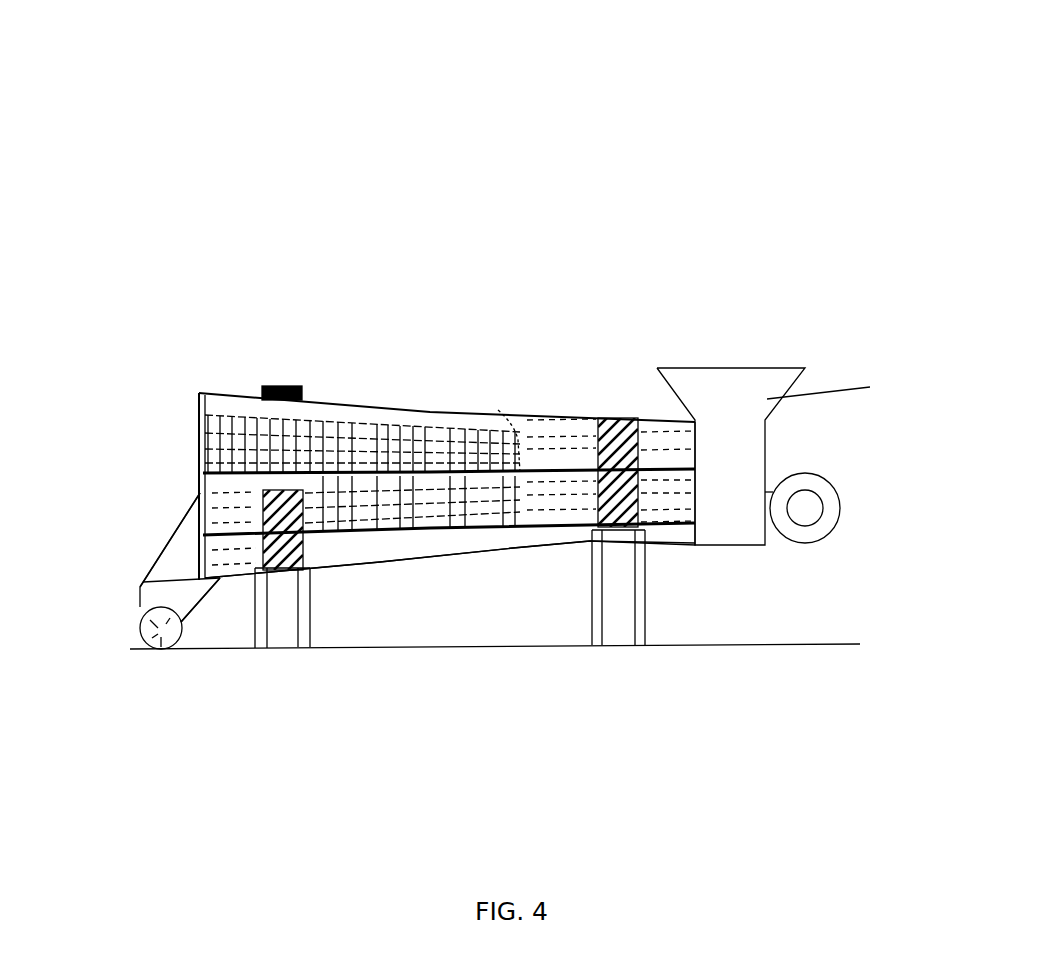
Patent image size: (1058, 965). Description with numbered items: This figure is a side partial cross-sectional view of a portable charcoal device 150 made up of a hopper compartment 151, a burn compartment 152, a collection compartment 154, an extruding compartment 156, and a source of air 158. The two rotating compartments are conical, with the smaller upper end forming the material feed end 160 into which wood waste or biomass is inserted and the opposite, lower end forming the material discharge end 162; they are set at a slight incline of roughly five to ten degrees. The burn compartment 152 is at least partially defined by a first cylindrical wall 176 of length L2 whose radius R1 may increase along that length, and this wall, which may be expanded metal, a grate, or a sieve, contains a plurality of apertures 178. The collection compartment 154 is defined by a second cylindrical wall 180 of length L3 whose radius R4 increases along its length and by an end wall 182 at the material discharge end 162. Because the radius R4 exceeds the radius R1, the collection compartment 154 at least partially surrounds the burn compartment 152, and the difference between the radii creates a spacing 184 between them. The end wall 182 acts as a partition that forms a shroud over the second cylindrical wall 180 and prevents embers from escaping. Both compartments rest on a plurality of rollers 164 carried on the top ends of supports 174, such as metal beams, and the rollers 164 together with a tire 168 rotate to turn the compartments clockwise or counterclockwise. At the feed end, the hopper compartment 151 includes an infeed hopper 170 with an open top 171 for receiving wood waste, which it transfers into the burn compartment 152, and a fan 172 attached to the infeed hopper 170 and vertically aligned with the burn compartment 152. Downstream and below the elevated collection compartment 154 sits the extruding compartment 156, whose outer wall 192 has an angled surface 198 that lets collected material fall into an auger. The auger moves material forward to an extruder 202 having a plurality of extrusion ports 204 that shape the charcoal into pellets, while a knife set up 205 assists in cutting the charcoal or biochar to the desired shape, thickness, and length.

The portable charcoal device 150 is at (714, 55).
The hopper compartment 151 is at (778, 432).
The burn compartment 152 is at (247, 416).
The collection compartment 154 is at (499, 407).
The extruding compartment 156 is at (137, 608).
The source of air 158 is at (838, 472).
The material feed end 160 is at (805, 362).
The material discharge end 162 is at (134, 538).
The rollers 164 is at (276, 588).
The tire 168 is at (297, 375).
The infeed hopper 170 is at (841, 391).
The open top 171 is at (736, 358).
The fan 172 is at (823, 525).
The supports 174 is at (308, 615).
The first cylindrical wall 176 is at (441, 432).
The apertures 178 is at (393, 432).
The second cylindrical wall 180 is at (445, 557).
The end wall 182 is at (198, 396).
The spacing 184 is at (407, 545).
The outer wall 192 is at (140, 593).
The angled surface 198 is at (193, 620).
The extruder 202 is at (147, 647).
The extrusion ports 204 is at (145, 620).
The knife set up 205 is at (153, 652).
The radius of second cylindrical wall R4 is at (362, 473).
The radius of first cylindrical wall R1 is at (650, 480).
The length of first cylindrical wall L2 is at (570, 470).
The length of second cylindrical wall L3 is at (515, 485).